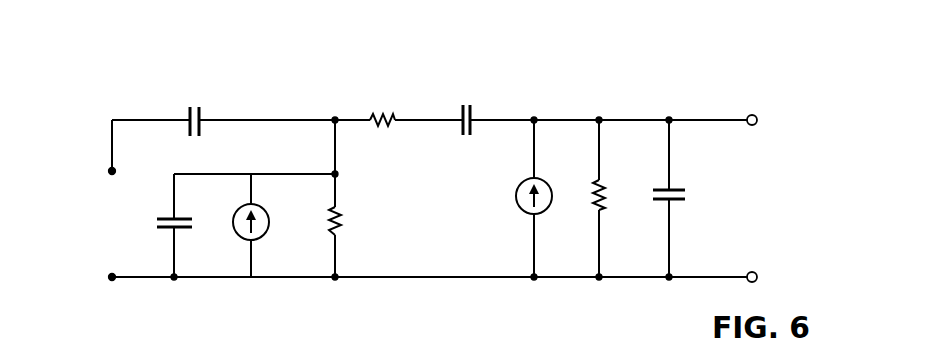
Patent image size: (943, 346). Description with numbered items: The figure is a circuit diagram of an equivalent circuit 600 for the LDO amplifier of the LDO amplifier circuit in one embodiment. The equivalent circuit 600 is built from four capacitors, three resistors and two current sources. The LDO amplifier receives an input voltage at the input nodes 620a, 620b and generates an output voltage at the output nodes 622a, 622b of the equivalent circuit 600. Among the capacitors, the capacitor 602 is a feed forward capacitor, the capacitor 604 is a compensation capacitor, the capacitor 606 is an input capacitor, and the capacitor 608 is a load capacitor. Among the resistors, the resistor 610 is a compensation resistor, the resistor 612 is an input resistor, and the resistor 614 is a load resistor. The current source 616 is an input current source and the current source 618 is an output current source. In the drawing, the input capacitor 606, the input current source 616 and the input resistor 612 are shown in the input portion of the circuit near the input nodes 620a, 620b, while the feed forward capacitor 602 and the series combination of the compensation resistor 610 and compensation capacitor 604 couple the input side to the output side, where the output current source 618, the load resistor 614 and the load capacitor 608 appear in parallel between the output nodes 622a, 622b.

The equivalent circuit 600 is at (70, 69).
The feed forward capacitor 602 is at (200, 131).
The compensation capacitor 604 is at (461, 129).
The input capacitor 606 is at (168, 218).
The load capacitor 608 is at (673, 186).
The compensation resistor 610 is at (376, 127).
The input resistor 612 is at (340, 216).
The load resistor 614 is at (604, 180).
The input current source 616 is at (263, 208).
The output current source 618 is at (542, 178).
The input node 620a is at (110, 170).
The input node 620b is at (110, 276).
The output node 622a is at (763, 103).
The output node 622b is at (755, 271).